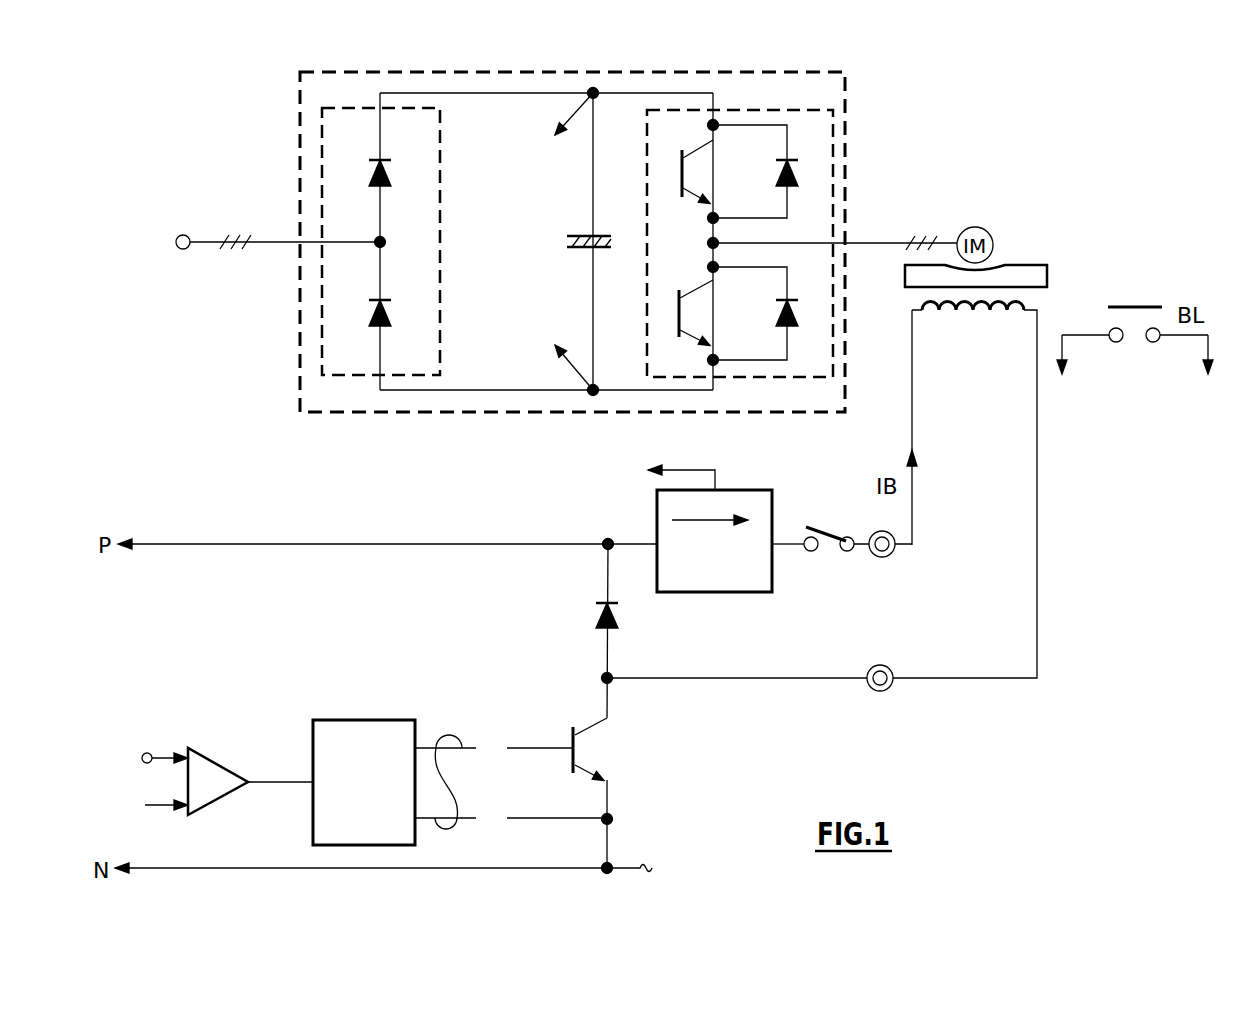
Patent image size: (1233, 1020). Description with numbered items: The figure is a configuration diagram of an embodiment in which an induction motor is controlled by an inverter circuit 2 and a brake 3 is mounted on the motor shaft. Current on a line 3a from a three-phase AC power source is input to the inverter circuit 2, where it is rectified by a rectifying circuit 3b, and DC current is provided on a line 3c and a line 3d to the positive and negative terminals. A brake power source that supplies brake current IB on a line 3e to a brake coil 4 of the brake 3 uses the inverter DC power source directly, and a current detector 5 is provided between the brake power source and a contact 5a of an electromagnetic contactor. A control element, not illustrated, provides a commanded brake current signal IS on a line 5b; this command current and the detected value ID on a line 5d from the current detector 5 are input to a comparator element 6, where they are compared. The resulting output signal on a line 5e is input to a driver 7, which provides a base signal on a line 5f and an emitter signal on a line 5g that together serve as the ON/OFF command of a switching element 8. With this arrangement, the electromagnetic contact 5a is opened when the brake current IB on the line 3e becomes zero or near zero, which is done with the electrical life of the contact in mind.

The inverter circuit 2 is at (437, 72).
The brake 3 is at (1022, 265).
The line 3a is at (205, 240).
The rectifying circuit 3b is at (442, 228).
The line 3c is at (524, 94).
The line 3d is at (634, 389).
The line 3e is at (915, 530).
The brake coil 4 is at (1022, 305).
The current detector 5 is at (772, 575).
The contact 5a is at (826, 558).
The line 5b is at (162, 756).
The line 5d is at (165, 806).
The line 5e is at (262, 782).
The line 5f is at (540, 748).
The line 5g is at (520, 820).
The comparator element 6 is at (205, 755).
The driver 7 is at (365, 720).
The switching element 8 is at (608, 768).